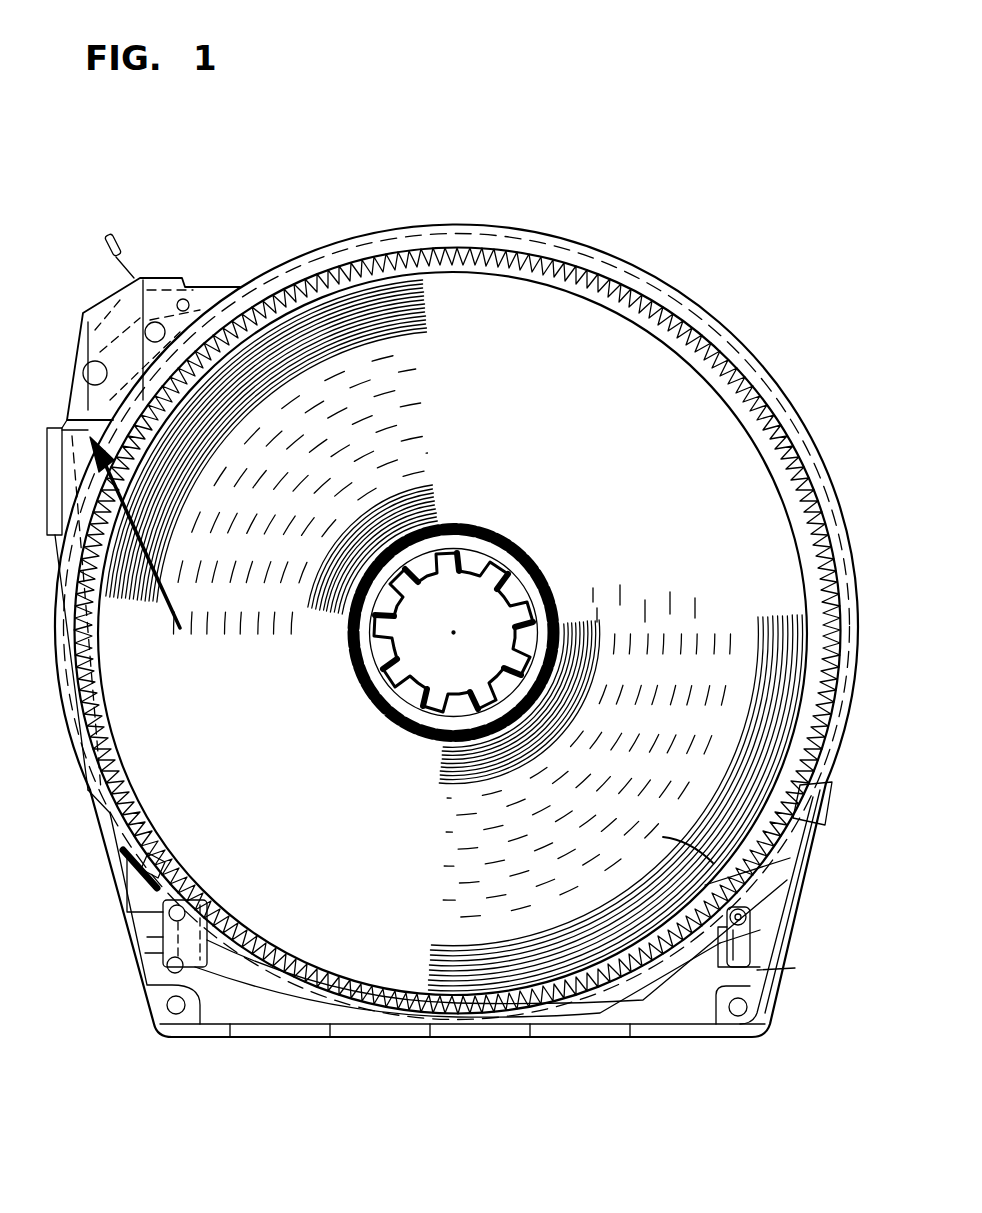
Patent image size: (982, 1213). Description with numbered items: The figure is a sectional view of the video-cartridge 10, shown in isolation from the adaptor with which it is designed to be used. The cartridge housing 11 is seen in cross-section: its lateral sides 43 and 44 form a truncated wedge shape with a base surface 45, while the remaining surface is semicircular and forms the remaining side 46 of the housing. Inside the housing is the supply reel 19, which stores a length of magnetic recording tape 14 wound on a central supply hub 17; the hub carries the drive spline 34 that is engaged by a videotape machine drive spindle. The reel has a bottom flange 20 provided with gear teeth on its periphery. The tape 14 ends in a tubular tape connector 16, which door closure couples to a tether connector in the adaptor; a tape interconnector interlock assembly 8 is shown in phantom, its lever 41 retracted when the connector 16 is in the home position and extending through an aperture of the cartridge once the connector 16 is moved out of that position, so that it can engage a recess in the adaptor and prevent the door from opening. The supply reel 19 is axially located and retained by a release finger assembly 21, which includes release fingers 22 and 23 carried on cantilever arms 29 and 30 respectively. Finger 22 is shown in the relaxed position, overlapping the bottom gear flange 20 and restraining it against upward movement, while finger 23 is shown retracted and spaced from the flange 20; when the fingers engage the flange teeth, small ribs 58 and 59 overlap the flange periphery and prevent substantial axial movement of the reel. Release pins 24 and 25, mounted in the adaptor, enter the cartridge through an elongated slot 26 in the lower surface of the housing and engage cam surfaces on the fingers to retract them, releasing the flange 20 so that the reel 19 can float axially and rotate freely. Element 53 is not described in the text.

The tape interconnector interlock assembly 8 is at (135, 545).
The cartridge 10 is at (672, 248).
The cartridge housing 11 is at (157, 1037).
The tape 14 is at (130, 455).
The tape connector 16 is at (112, 234).
The supply hub 17 is at (498, 560).
The supply reel 19 is at (586, 475).
The bottom flange 20 is at (747, 387).
The release finger assembly 21 is at (462, 1015).
The release finger 22 is at (190, 877).
The release finger 23 is at (800, 903).
The release pin 24 is at (775, 927).
The release pin 25 is at (195, 897).
The elongated slot 26 is at (236, 940).
The cantilever arm 29 is at (653, 1000).
The cantilever arm 30 is at (313, 1003).
The drive spline 34 is at (503, 652).
The lever 41 is at (47, 429).
The lateral side 43 is at (803, 837).
The lateral side 44 is at (108, 881).
The base surface 45 is at (548, 1020).
The remaining side 46 is at (557, 226).
The pawl 53 is at (796, 969).
The rib 58 is at (170, 880).
The rib 59 is at (663, 838).